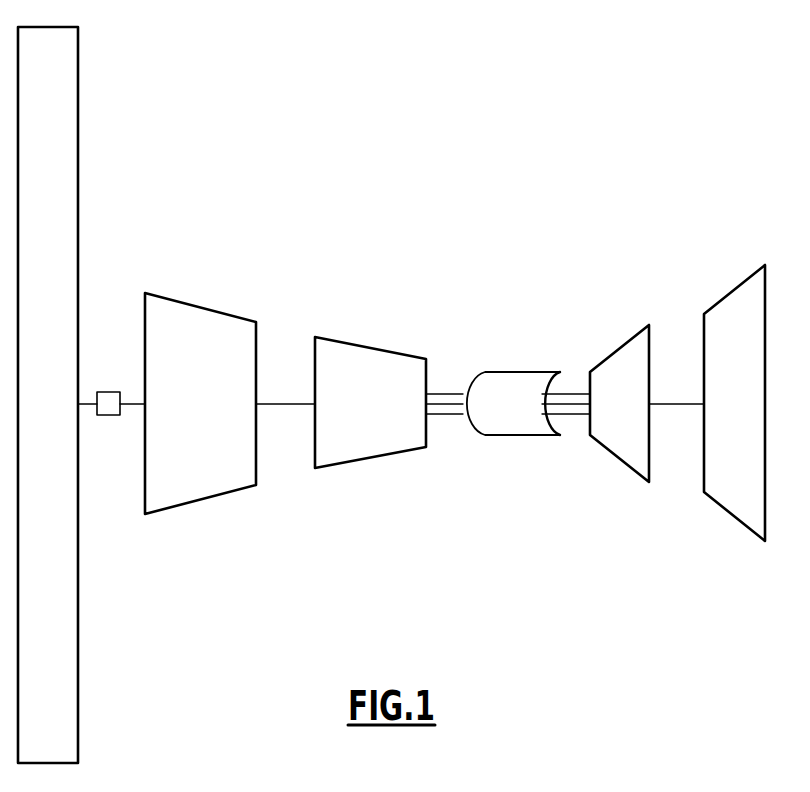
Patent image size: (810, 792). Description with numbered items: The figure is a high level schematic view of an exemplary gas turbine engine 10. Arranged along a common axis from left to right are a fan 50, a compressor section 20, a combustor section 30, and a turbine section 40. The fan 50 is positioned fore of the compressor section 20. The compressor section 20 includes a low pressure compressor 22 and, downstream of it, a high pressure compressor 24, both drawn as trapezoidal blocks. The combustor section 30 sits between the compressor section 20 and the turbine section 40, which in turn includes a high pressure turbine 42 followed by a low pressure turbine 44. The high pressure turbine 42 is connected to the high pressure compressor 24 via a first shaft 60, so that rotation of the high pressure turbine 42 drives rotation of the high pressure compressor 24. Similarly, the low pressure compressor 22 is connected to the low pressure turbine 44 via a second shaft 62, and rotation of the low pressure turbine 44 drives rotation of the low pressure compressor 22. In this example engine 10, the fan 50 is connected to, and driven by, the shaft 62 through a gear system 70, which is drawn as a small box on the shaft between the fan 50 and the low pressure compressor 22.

The gas turbine engine 10 is at (478, 112).
The compressor section 20 is at (427, 243).
The low pressure compressor 22 is at (191, 506).
The high pressure compressor 24 is at (363, 462).
The combustor section 30 is at (510, 372).
The turbine section 40 is at (765, 243).
The high pressure turbine 42 is at (613, 457).
The low pressure turbine 44 is at (732, 518).
The fan 50 is at (80, 88).
The first shaft 60 is at (445, 415).
The second shaft 62 is at (281, 405).
The gear system 70 is at (106, 416).